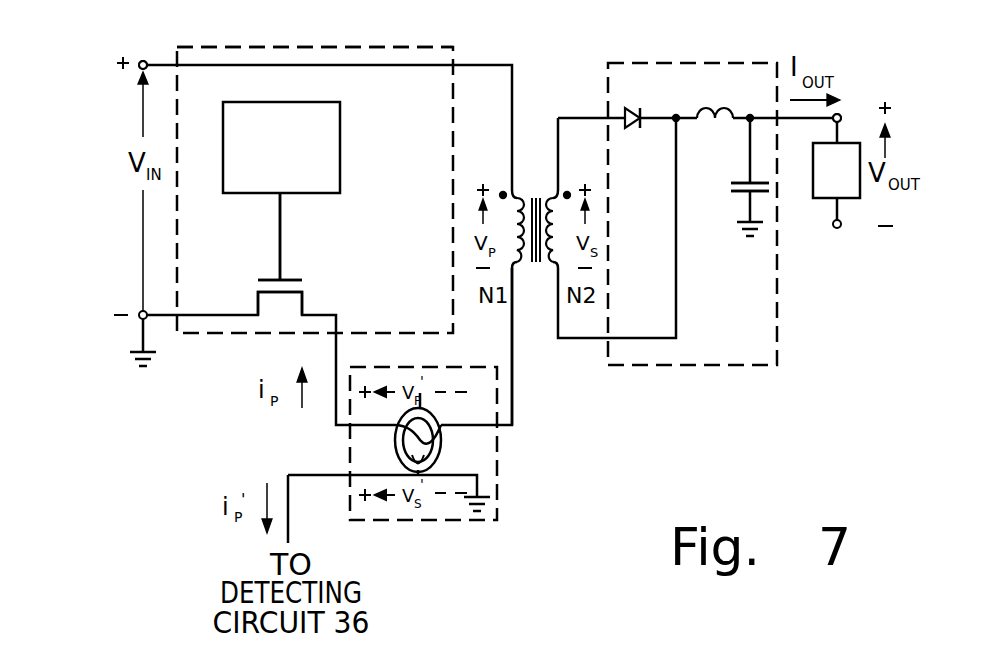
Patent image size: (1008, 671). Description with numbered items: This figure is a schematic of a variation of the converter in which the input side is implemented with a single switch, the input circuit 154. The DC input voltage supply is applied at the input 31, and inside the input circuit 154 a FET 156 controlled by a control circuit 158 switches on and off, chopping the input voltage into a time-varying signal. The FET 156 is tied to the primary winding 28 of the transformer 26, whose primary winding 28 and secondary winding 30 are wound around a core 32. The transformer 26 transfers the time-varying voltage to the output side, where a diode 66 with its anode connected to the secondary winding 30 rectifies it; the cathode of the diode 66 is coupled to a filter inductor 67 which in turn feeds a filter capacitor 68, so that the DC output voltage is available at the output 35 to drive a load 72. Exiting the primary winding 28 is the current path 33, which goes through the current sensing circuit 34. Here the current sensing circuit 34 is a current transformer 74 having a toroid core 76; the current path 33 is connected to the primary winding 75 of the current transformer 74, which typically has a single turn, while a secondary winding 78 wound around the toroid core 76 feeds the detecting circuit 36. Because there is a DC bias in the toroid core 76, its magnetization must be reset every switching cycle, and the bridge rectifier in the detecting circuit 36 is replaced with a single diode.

The input 31 is at (120, 86).
The detecting circuit 36 is at (315, 166).
The input circuit 154 is at (422, 36).
The control circuit 158 is at (259, 166).
The FET 156 is at (300, 302).
The transformer 26 is at (536, 196).
The primary winding 28 is at (500, 192).
The secondary winding 30 is at (570, 192).
The core 32 is at (540, 266).
The current path 33 is at (514, 352).
The diode 66 is at (628, 106).
The filter inductor 67 is at (710, 106).
The filter capacitor 68 is at (743, 180).
The output 35 is at (856, 126).
The load 72 is at (822, 185).
The current sensing circuit 34 is at (471, 446).
The current transformer 74 is at (461, 447).
The primary winding 75 is at (406, 436).
The toroid core 76 is at (437, 422).
The secondary winding 78 is at (430, 470).